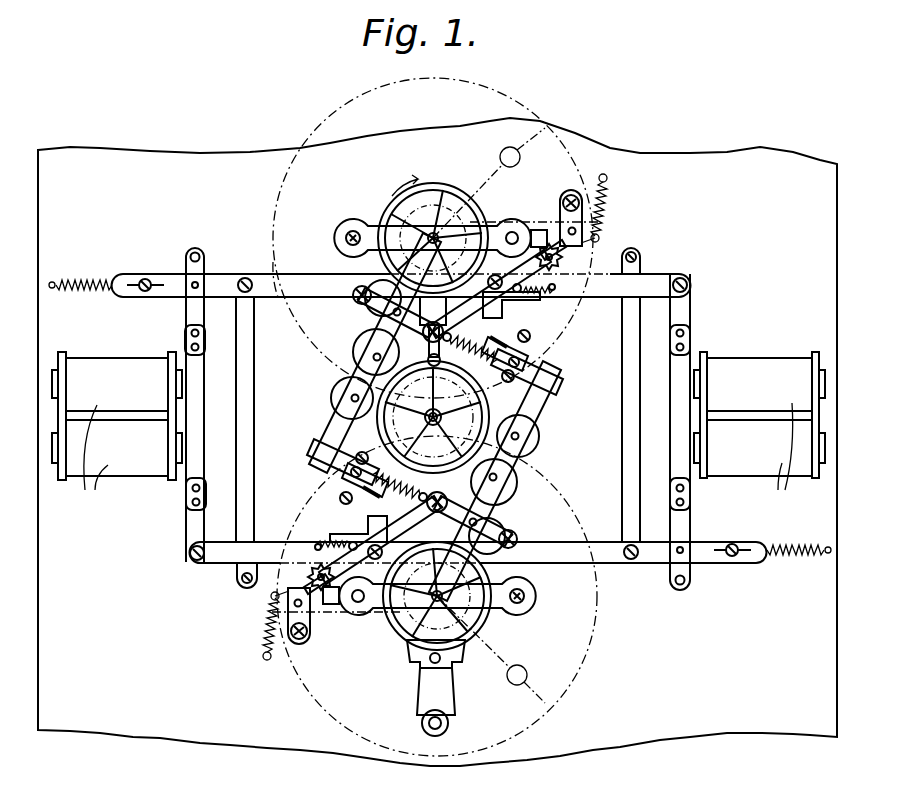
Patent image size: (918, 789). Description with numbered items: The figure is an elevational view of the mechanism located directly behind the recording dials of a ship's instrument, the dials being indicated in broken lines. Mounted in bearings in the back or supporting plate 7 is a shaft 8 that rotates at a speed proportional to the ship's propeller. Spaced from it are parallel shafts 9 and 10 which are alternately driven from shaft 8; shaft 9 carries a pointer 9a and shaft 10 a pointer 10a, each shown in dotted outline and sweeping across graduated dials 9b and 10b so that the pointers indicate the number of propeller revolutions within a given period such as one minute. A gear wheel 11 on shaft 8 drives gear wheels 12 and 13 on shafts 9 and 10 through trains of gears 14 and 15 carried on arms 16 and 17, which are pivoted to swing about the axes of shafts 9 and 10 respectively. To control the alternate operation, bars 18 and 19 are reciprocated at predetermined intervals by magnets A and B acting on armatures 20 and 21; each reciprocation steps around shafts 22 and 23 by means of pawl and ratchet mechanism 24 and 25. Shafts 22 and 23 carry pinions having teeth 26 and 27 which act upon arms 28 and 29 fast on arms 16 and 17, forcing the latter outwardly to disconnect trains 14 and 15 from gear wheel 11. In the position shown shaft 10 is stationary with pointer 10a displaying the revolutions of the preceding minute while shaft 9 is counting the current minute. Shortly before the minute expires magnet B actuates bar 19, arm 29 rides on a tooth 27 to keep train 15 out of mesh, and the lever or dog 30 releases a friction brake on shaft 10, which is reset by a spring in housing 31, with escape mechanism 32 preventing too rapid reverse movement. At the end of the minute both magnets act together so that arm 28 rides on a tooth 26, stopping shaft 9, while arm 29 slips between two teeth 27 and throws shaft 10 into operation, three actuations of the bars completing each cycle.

The supporting plate 7 is at (735, 167).
The shaft 8 is at (490, 405).
The shaft 9 is at (447, 236).
The pointer 9a is at (527, 150).
The dial 9b is at (574, 163).
The shaft 10 is at (515, 572).
The pointer 10a is at (545, 688).
The dial 10b is at (595, 644).
The gear wheel 11 is at (555, 365).
The gear wheel 12 is at (438, 185).
The gear wheel 13 is at (493, 623).
The train of gears 14 is at (357, 350).
The train of gears 15 is at (523, 470).
The arm 16 is at (347, 418).
The arm 17 is at (482, 520).
The bar 18 is at (277, 280).
The bar 19 is at (230, 561).
The armature 20 is at (682, 363).
The armature 21 is at (195, 467).
The shaft 22 is at (597, 245).
The shaft 23 is at (310, 625).
The pawl and ratchet mechanism 24 is at (553, 270).
The pawl and ratchet mechanism 25 is at (335, 578).
The pinion teeth 26 is at (560, 263).
The pinion teeth 27 is at (330, 598).
The arm 28 is at (450, 318).
The arm 29 is at (355, 500).
The lever or dog 30 is at (276, 655).
The housing 31 is at (405, 645).
The escape mechanism 32 is at (453, 683).
The magnet A is at (759, 431).
The magnet B is at (117, 434).